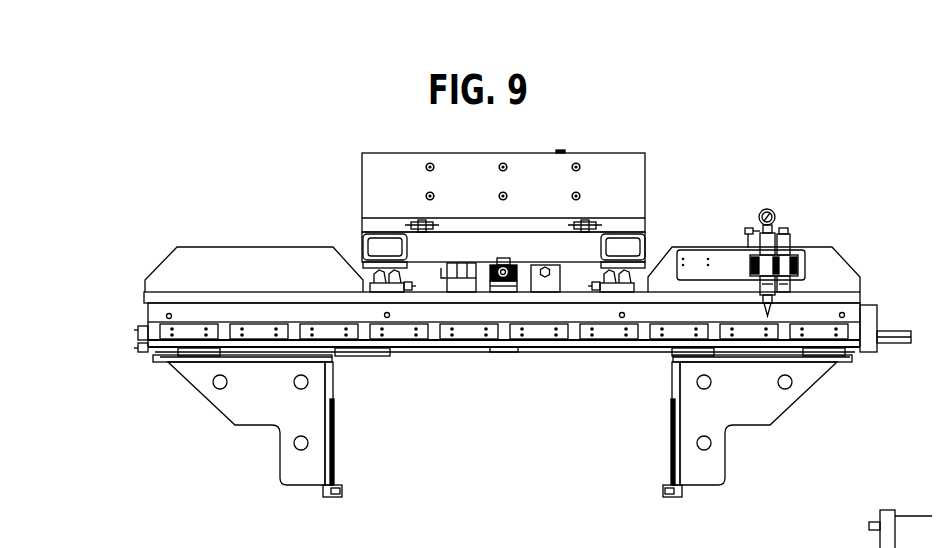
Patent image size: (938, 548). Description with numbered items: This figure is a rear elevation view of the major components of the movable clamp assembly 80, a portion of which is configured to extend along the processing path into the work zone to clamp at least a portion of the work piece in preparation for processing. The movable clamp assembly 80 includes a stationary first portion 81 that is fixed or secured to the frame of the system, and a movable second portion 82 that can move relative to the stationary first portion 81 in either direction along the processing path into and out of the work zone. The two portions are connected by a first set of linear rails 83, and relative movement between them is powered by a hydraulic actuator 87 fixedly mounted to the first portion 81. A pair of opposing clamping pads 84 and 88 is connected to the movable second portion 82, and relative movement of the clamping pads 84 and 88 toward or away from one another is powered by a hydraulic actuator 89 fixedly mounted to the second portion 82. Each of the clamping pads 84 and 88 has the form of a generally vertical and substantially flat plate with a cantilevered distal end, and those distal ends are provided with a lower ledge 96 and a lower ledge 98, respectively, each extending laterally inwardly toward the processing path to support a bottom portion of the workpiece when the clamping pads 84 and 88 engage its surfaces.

The movable clamp assembly 80 is at (624, 126).
The stationary first portion 81 is at (354, 143).
The movable second portion 82 is at (131, 504).
The first set of linear rails 83 is at (618, 283).
The clamping pad 84 is at (236, 407).
The hydraulic actuator 87 is at (507, 263).
The clamping pad 88 is at (740, 400).
The hydraulic actuator 89 is at (892, 338).
The lower ledge 96 is at (331, 497).
The lower ledge 98 is at (673, 494).